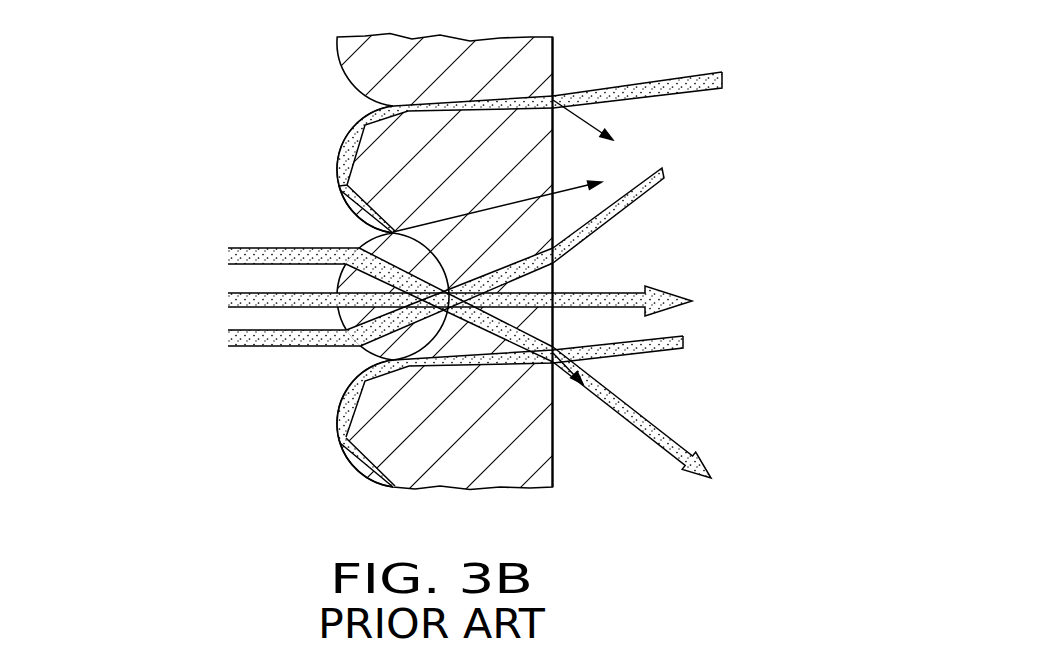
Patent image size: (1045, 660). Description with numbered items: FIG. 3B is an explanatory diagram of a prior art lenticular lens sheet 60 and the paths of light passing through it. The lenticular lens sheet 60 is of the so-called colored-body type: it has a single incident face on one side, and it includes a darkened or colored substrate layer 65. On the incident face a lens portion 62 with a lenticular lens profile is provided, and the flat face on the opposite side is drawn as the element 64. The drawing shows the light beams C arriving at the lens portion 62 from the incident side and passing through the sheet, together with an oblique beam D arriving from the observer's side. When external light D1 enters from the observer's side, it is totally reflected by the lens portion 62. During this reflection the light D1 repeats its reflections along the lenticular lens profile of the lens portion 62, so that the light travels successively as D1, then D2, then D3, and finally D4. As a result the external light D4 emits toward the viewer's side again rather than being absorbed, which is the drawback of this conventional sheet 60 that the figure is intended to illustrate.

The lenticular lens sheet 60 is at (310, 410).
The lens portion 62 is at (336, 452).
The flat exit surface 64 is at (557, 473).
The substrate layer 65 is at (375, 445).
The central light beams C is at (292, 250).
The oblique incident light beam D is at (640, 80).
The external light D1 is at (588, 87).
The reflected light D2 is at (352, 147).
The reflected light D3 is at (338, 202).
The external light D4 is at (567, 192).